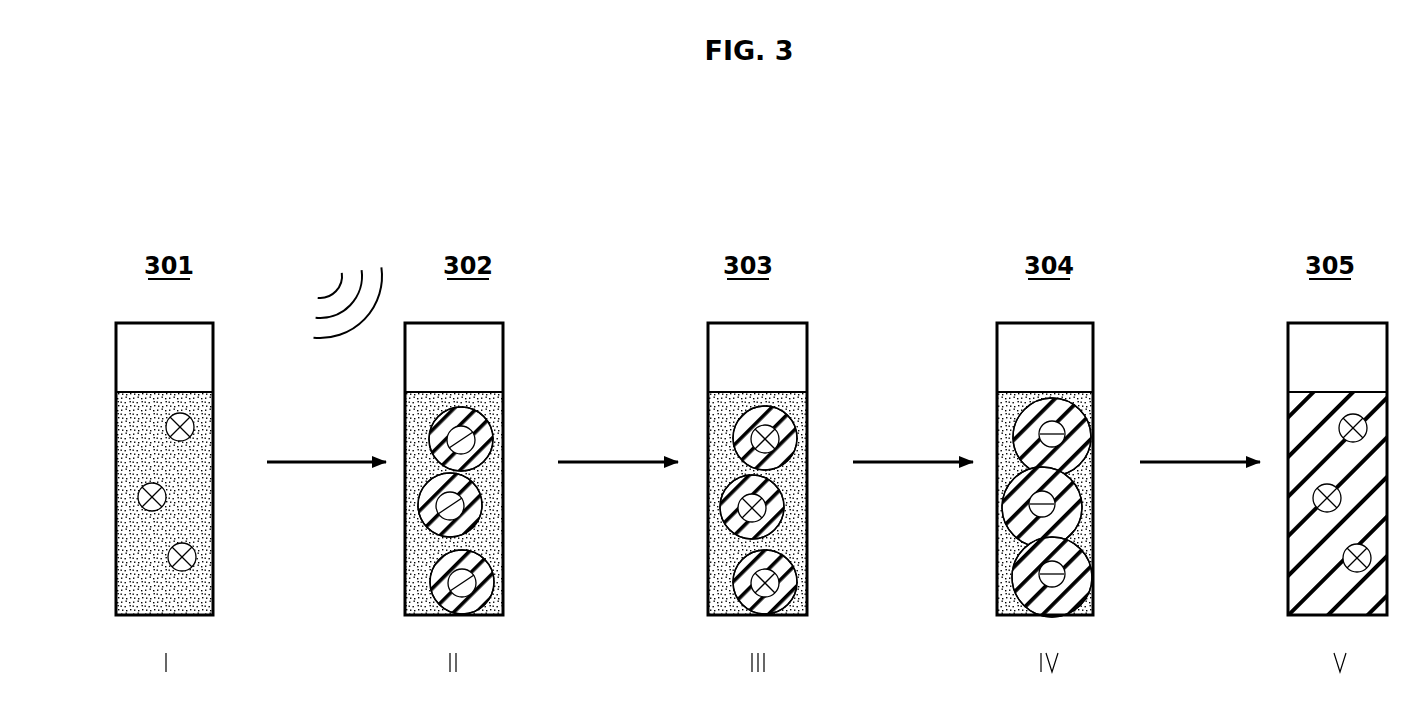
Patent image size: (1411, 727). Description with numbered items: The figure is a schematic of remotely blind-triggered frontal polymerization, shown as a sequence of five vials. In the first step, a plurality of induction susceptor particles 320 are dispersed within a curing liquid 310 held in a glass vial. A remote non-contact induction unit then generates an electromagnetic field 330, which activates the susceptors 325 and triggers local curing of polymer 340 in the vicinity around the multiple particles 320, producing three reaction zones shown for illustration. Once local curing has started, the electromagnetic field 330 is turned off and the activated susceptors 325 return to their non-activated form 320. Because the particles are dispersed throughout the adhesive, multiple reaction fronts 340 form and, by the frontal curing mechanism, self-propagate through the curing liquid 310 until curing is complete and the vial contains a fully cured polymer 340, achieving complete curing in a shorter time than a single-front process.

The curing liquid 310 is at (214, 507).
The induction susceptor particles 320 is at (190, 427).
The activated susceptors 325 is at (459, 438).
The electromagnetic field 330 is at (333, 260).
The polymer 340 is at (483, 440).